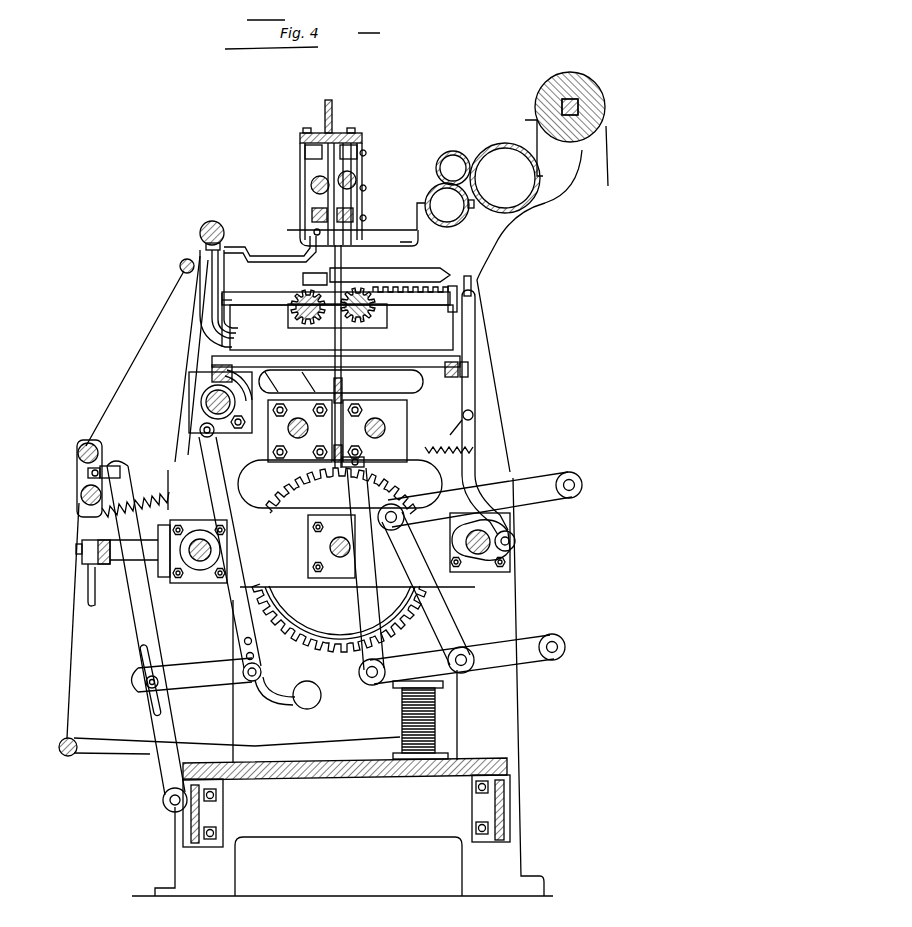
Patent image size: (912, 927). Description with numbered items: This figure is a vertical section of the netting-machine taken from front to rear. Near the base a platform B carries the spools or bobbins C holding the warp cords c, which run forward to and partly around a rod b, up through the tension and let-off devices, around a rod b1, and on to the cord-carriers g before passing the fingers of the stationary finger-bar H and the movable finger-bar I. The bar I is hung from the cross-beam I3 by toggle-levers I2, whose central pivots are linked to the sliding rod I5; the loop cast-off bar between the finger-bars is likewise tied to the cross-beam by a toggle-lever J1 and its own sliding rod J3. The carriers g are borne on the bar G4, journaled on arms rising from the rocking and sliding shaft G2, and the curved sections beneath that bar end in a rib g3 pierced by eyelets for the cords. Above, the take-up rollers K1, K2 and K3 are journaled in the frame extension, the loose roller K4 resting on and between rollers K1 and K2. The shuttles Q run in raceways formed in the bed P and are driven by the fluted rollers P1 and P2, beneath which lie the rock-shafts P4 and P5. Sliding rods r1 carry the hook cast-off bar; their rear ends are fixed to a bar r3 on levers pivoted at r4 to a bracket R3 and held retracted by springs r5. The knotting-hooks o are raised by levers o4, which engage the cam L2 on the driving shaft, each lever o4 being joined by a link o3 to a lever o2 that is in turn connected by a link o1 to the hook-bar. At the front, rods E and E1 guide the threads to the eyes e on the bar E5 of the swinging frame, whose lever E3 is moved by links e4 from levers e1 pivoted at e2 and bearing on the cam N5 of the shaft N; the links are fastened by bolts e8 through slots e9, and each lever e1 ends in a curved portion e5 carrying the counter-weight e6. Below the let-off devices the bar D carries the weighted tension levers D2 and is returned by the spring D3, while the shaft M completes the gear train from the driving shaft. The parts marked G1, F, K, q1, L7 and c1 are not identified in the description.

The movable finger-bar I is at (337, 305).
The cross-beam I3 is at (335, 114).
The toggle-levers I2 is at (357, 153).
The sliding rod I5 is at (360, 177).
The cam L2 is at (452, 542).
The toggle-lever J1 is at (320, 172).
The sliding rod J3 is at (311, 184).
The stationary finger-bar H is at (328, 208).
The cord-carriers g is at (314, 231).
The lever arm G1 is at (262, 252).
The carrier bar G4 is at (213, 222).
The rib g3 is at (238, 283).
The rod b1 is at (180, 266).
The warp cords c is at (270, 746).
The frame F is at (156, 353).
The take-up roller K3 is at (571, 117).
The bracket K is at (523, 142).
The take-up roller K2 is at (502, 169).
The free roller K4 is at (449, 158).
The take-up roller K1 is at (424, 205).
The shuttle Q is at (412, 283).
The rack q1 is at (410, 300).
The bar r3 is at (463, 276).
The sliding rods r1 is at (478, 293).
The bracket R3 is at (340, 380).
The pivot r4 is at (449, 431).
The spring r5 is at (440, 455).
The shuttle bed P is at (320, 312).
The fluted roller P1 is at (293, 313).
The fluted roller P2 is at (358, 318).
The rock-shaft P5 is at (300, 431).
The rock-shaft P4 is at (375, 431).
The rocking shaft G2 is at (220, 413).
The pivot e2 is at (196, 436).
The let-off lever e1 is at (218, 458).
The rod E is at (78, 452).
The rod E1 is at (80, 500).
The thread eyes e is at (90, 478).
The swinging-frame bar E5 is at (108, 468).
The swinging-frame lever E3 is at (140, 616).
The spring D3 is at (148, 500).
The tension bar D is at (84, 556).
The weighted tension lever D2 is at (88, 585).
The front shaft N is at (215, 546).
The cam N5 is at (200, 562).
The intermediate shaft M is at (330, 548).
The link o1 is at (352, 601).
The knotting-hooks o is at (343, 474).
The lever o4 is at (480, 501).
The link o3 is at (426, 588).
The lever o2 is at (462, 659).
The bearing plate L7 is at (478, 573).
The link e4 is at (192, 675).
The bolt e8 is at (145, 683).
The slot e9 is at (146, 660).
The curved portion e5 is at (275, 700).
The counter-weight e6 is at (307, 695).
The cord c1 is at (73, 655).
The rod b is at (65, 757).
The bobbins C is at (436, 742).
The platform B is at (308, 782).